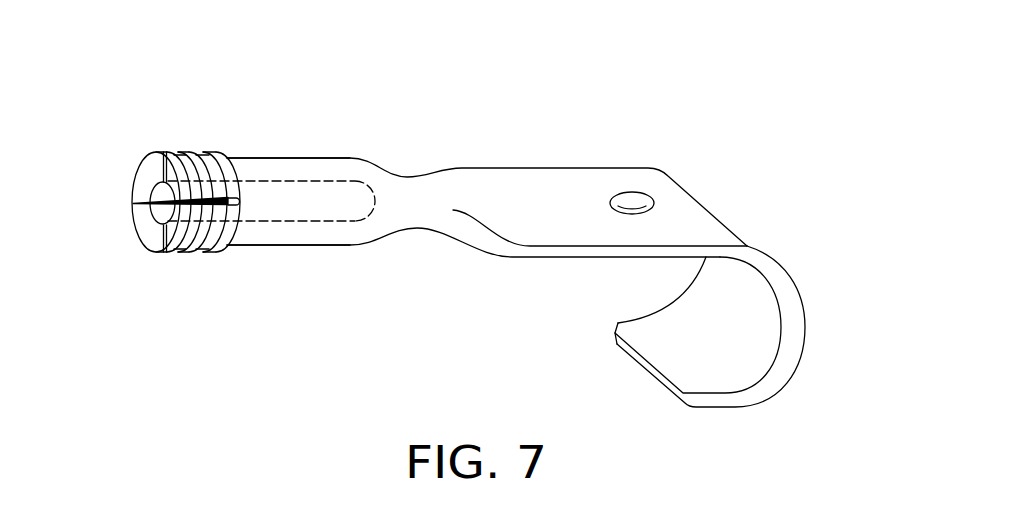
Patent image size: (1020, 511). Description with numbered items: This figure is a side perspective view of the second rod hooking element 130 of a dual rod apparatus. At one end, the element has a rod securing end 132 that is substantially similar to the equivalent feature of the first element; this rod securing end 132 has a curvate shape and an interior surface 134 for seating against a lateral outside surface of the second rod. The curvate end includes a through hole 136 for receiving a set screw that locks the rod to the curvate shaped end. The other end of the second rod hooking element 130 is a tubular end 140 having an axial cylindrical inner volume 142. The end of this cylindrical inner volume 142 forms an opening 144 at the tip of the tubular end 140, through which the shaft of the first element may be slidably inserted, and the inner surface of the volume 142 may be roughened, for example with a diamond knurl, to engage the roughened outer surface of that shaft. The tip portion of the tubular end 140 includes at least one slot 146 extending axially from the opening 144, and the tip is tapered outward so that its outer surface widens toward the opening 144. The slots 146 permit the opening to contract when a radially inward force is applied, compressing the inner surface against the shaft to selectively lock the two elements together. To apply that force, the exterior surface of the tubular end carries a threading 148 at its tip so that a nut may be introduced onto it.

The second rod hooking element 130 is at (576, 124).
The rod securing end 132 is at (816, 341).
The interior surface 134 is at (713, 365).
The through hole 136 is at (648, 202).
The tubular end 140 is at (124, 105).
The axial cylindrical inner volume 142 is at (343, 207).
The opening 144 is at (155, 192).
The slot 146 is at (163, 153).
The threading 148 is at (233, 153).